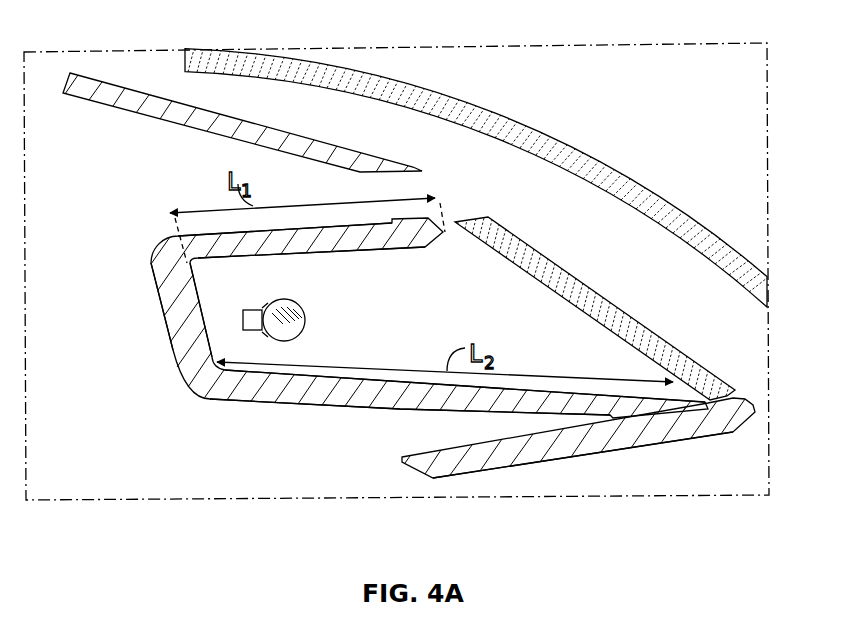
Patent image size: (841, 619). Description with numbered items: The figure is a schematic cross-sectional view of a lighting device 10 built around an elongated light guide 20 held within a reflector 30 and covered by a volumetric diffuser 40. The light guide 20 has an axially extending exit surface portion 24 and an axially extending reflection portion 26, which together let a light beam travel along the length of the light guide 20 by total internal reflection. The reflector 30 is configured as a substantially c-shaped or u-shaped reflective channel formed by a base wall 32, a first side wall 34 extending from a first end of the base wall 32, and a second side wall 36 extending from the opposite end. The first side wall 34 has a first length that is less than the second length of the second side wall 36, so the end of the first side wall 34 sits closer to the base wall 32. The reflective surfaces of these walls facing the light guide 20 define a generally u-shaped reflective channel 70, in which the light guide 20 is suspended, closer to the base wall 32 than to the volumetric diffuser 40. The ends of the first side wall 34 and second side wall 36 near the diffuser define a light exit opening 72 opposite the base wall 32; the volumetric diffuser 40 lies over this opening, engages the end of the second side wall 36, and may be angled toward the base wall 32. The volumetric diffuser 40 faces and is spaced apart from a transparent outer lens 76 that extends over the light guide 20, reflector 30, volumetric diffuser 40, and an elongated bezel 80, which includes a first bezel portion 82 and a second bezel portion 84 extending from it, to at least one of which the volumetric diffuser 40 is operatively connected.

The lighting device 10 is at (738, 36).
The elongated light guide 20 is at (304, 306).
The exit surface portion 24 is at (305, 322).
The reflection portion 26 is at (250, 309).
The reflector 30 is at (193, 403).
The base wall 32 is at (167, 346).
The first side wall 34 is at (397, 251).
The second side wall 36 is at (310, 408).
The volumetric diffuser 40 is at (486, 212).
The reflective channel 70 is at (424, 314).
The light exit opening 72 is at (447, 248).
The outer lens 76 is at (584, 137).
The elongated bezel 80 is at (731, 452).
The first bezel portion 82 is at (218, 108).
The second bezel portion 84 is at (589, 460).